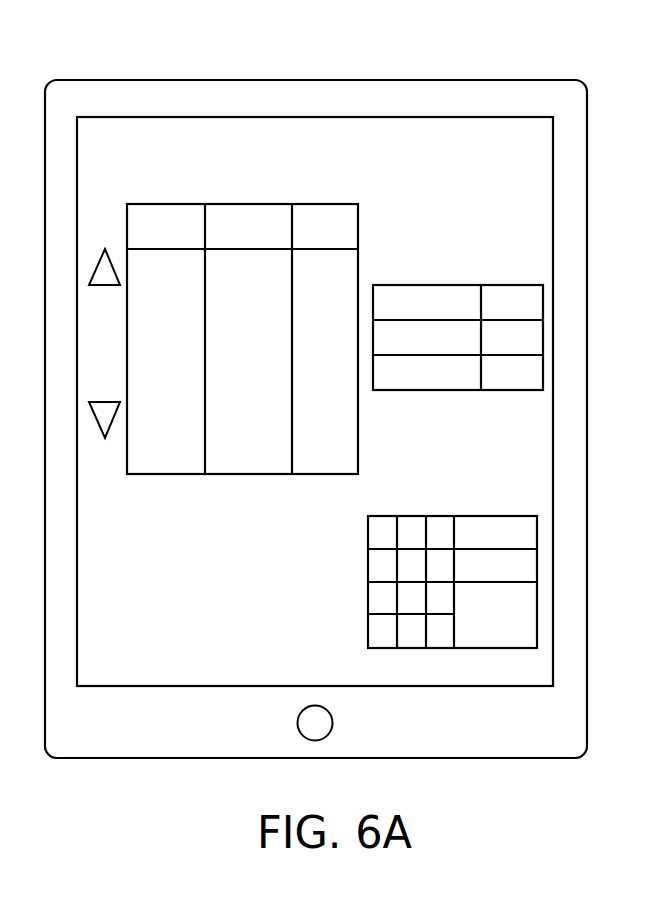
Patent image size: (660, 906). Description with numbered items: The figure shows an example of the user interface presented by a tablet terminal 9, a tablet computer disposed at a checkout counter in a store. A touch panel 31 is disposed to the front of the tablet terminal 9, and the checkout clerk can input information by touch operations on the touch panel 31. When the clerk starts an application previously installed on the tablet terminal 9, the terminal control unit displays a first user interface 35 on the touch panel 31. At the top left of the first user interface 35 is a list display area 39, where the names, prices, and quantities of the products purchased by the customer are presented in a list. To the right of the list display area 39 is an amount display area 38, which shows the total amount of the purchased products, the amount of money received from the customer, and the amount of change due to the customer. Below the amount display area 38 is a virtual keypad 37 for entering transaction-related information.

The tablet terminal 9 is at (193, 80).
The touch panel 31 is at (497, 140).
The first user interface 35 is at (316, 337).
The virtual keypad 37 is at (447, 516).
The amount display area 38 is at (497, 285).
The list display area 39 is at (147, 203).